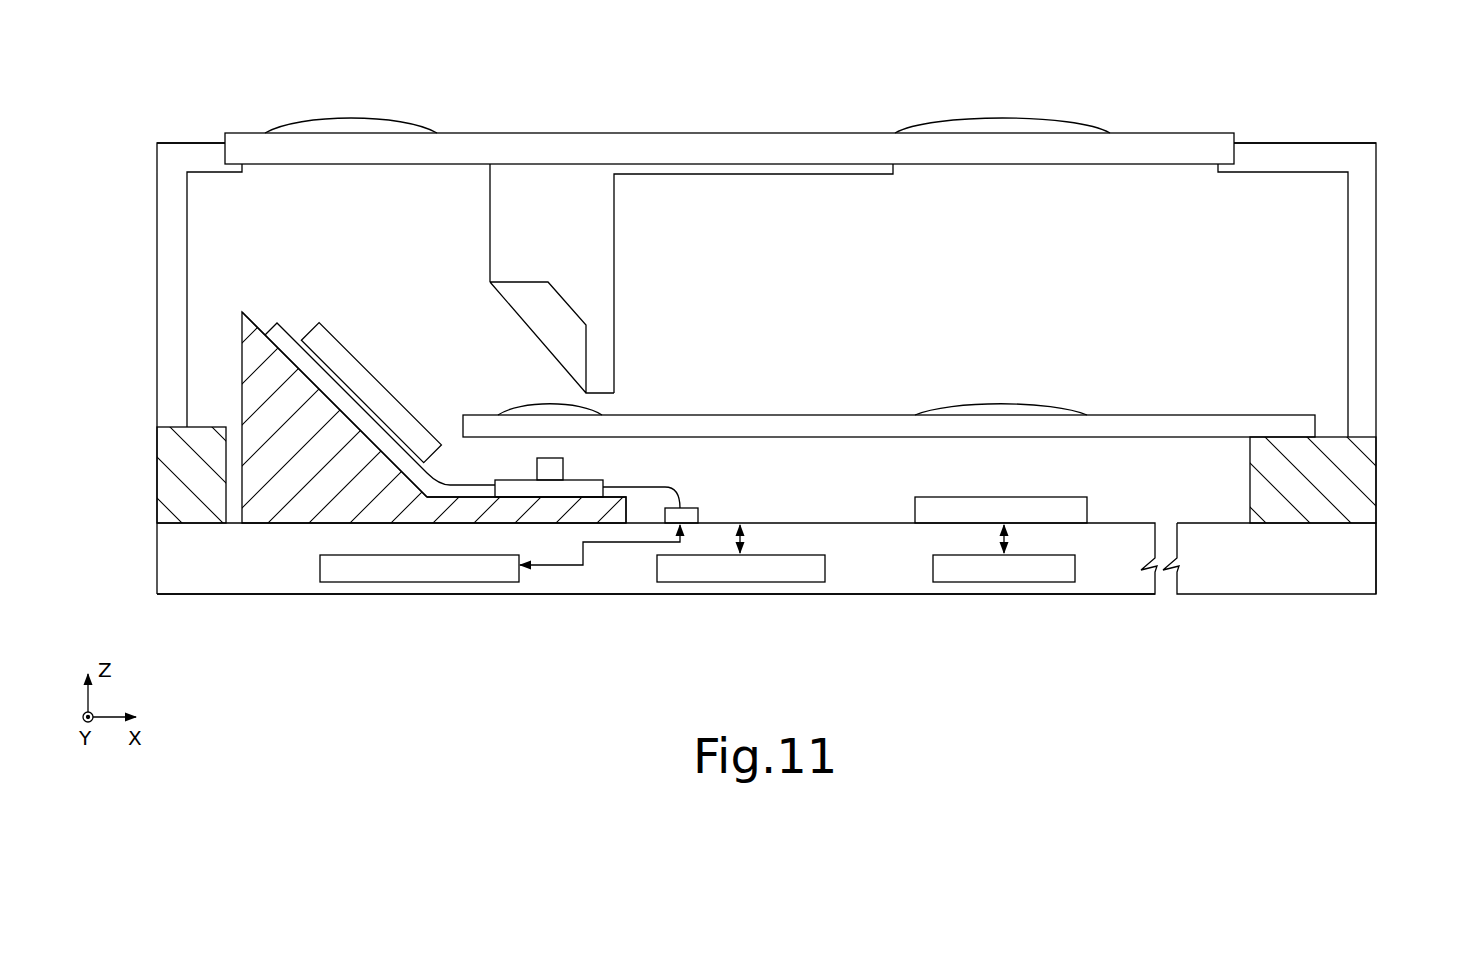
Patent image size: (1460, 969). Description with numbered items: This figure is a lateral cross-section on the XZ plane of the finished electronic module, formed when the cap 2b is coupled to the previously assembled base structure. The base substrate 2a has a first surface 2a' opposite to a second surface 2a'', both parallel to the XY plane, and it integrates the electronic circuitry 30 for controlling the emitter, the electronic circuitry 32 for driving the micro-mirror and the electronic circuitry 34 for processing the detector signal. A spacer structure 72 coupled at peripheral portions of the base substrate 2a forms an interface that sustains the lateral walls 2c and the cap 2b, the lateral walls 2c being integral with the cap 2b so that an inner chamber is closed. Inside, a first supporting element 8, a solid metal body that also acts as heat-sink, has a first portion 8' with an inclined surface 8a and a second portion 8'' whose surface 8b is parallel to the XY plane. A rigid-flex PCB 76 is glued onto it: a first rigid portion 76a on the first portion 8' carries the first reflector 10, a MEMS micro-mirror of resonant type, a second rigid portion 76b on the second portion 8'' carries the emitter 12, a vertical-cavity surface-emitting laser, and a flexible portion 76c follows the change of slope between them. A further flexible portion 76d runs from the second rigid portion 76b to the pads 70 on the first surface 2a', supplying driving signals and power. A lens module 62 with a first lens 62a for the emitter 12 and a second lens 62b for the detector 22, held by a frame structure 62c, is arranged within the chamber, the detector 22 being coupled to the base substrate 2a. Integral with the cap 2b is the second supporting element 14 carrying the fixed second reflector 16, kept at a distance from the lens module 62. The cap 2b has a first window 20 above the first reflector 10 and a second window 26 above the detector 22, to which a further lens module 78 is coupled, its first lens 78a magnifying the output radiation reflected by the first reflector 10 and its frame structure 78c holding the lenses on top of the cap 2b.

The base substrate 2a is at (730, 558).
The first surface 2a' is at (166, 468).
The second surface 2a'' is at (629, 608).
The cap 2b is at (182, 149).
The lateral walls 2c is at (178, 293).
The first supporting element 8 is at (437, 415).
The first portion 8' is at (354, 364).
The second portion 8'' is at (526, 579).
The surface 8a is at (345, 332).
The surface 8b is at (598, 473).
The first reflector 10 is at (307, 368).
The emitter 12 is at (537, 467).
The second supporting element 14 is at (598, 234).
The second reflector 16 is at (500, 294).
The first window 20 is at (367, 181).
The detector 22 is at (1072, 507).
The second window 26 is at (1030, 169).
The electronic circuitry 30 is at (818, 567).
The electronic circuitry 32 is at (412, 570).
The electronic circuitry 34 is at (1013, 572).
The lens module 62 is at (1174, 413).
The first lens 62a is at (508, 412).
The second lens 62b is at (975, 409).
The frame structure 62c is at (838, 414).
The pads 70 is at (691, 512).
The spacer structure 72 is at (1365, 463).
The PCB 76 is at (264, 321).
The first rigid portion 76a is at (361, 415).
The second rigid portion 76b is at (590, 478).
The flexible portion 76c is at (449, 478).
The further flexible portion 76d is at (681, 505).
The lens module 78 is at (655, 131).
The first lens 78a is at (343, 127).
The frame structure 78c is at (560, 143).